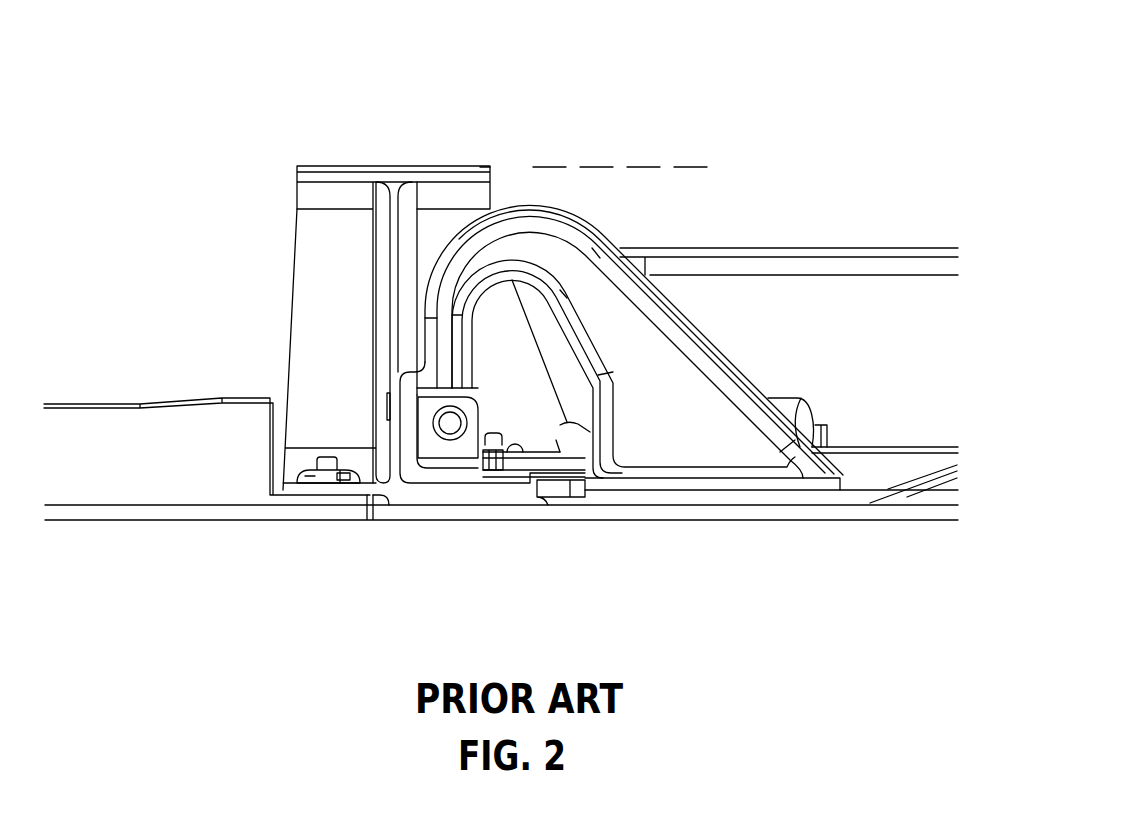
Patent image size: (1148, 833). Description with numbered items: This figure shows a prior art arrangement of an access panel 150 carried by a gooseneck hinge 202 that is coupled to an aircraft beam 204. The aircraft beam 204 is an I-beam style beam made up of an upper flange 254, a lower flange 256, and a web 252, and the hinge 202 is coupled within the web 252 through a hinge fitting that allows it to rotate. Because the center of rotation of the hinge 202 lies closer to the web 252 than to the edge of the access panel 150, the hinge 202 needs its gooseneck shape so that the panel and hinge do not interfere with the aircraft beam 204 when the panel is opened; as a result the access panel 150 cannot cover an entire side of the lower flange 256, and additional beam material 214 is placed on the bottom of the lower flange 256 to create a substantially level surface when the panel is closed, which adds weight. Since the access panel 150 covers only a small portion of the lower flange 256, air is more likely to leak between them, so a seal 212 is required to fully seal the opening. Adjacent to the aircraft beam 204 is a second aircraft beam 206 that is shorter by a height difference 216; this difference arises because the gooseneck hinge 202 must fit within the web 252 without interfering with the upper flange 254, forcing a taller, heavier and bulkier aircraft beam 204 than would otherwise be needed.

The access panel 150 is at (648, 512).
The gooseneck hinge 202 is at (473, 246).
The aircraft beam 204 is at (385, 164).
The aircraft beam 206 is at (788, 245).
The seal 212 is at (556, 507).
The additional beam material 214 is at (432, 507).
The height difference 216 is at (677, 168).
The web 252 is at (384, 330).
The upper flange 254 is at (317, 164).
The lower flange 256 is at (330, 499).